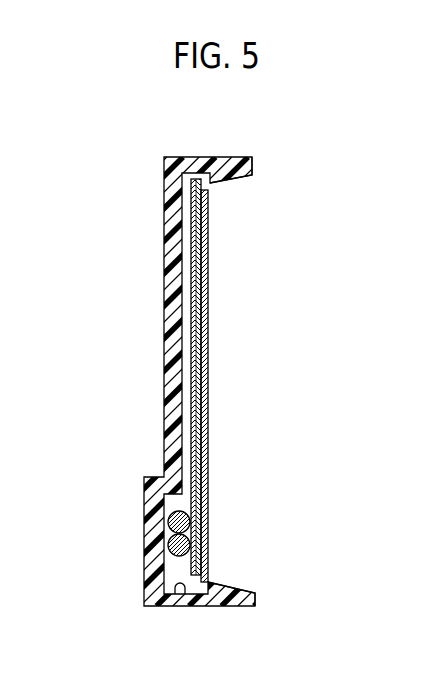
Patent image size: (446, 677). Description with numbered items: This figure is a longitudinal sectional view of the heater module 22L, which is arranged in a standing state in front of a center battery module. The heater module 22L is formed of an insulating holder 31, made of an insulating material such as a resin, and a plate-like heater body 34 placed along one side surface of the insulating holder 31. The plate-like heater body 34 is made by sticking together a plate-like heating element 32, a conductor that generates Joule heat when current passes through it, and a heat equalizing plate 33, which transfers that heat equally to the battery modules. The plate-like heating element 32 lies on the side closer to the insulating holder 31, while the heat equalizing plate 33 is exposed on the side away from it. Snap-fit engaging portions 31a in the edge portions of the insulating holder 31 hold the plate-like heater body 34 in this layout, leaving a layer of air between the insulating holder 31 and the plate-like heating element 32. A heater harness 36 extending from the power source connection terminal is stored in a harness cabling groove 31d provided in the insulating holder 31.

The heater module 22L is at (259, 144).
The insulating holder 31 is at (157, 217).
The engaging portions for the heater body 31a is at (215, 186).
The harness cabling groove 31d is at (192, 594).
The plate-like heating element 32 is at (208, 403).
The heat equalizing plate 33 is at (203, 382).
The plate-like heater body 34 is at (305, 362).
The heater harness 36 is at (172, 538).